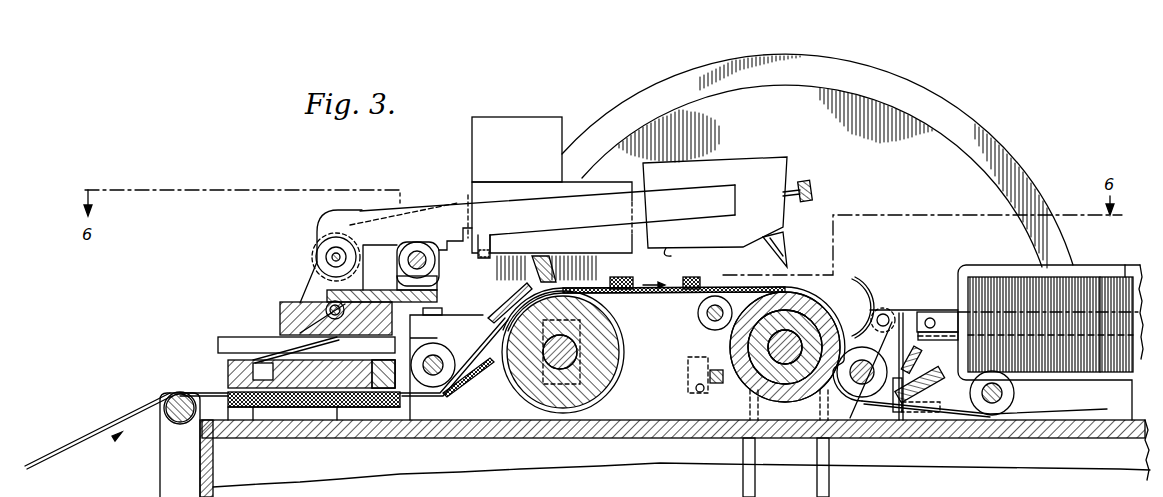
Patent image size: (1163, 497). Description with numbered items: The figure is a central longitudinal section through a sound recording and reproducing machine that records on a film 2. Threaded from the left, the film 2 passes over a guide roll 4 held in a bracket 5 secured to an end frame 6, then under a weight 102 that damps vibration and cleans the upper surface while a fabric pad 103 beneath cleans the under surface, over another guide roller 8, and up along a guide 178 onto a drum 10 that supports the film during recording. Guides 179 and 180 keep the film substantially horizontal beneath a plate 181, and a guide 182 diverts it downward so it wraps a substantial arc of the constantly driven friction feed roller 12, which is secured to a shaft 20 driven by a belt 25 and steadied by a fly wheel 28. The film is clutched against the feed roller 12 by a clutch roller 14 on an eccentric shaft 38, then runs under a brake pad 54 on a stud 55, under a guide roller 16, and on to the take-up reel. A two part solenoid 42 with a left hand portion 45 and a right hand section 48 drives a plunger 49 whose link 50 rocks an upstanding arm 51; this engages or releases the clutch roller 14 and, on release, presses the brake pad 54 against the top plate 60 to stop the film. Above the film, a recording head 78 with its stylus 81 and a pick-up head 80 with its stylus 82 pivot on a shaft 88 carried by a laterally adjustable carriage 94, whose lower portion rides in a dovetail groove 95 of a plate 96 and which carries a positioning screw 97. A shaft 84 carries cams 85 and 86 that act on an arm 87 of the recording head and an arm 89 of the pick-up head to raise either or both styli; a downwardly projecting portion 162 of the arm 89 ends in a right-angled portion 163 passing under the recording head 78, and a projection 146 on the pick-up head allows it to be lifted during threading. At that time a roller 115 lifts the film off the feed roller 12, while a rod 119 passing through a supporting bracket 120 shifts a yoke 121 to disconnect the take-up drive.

The film 2 is at (66, 446).
The guide roll 4 is at (170, 415).
The bracket 5 is at (160, 466).
The end frame 6 is at (213, 468).
The guide roller 8 is at (444, 392).
The drum 10 is at (626, 350).
The friction feed roller 12 is at (812, 310).
The clutch roller 14 is at (856, 398).
The guide roller 16 is at (988, 416).
The shaft 20 is at (745, 380).
The belt 25 is at (830, 488).
The fly wheel 28 is at (985, 133).
The eccentric shaft 38 is at (862, 384).
The two part solenoid 42 is at (1080, 264).
The left hand portion of the solenoid 45 is at (976, 275).
The right hand section of the solenoid 48 is at (1125, 270).
The plunger 49 is at (931, 317).
The link 50 is at (910, 310).
The upstanding arm 51 is at (883, 313).
The brake pad 54 is at (937, 388).
The stud 55 is at (921, 358).
The top plate 60 is at (934, 430).
The recording head 78 is at (475, 188).
The pick-up head 80 is at (717, 153).
The stylus 81 is at (562, 286).
The stylus 82 is at (789, 262).
The shaft 84 is at (418, 254).
The cam 85 is at (436, 283).
The cam 86 is at (436, 263).
The arm 87 is at (448, 243).
The shaft 88 is at (328, 257).
The arm 89 is at (602, 205).
The carriage 94 is at (328, 305).
The dovetail groove 95 is at (284, 325).
The plate 96 is at (283, 310).
The screw 97 is at (325, 303).
The weight 102 is at (228, 375).
The pad 103 is at (342, 424).
The roller 115 is at (698, 318).
The rod 119 is at (688, 386).
The supporting bracket 120 is at (695, 422).
The yoke 121 is at (778, 424).
The projection 146 is at (683, 260).
The downwardly projecting portion 162 is at (485, 240).
The portion 163 is at (481, 266).
The guide 178 is at (472, 384).
The guide 179 is at (628, 268).
The guide 180 is at (698, 277).
The plate 181 is at (650, 297).
The guide 182 is at (863, 283).